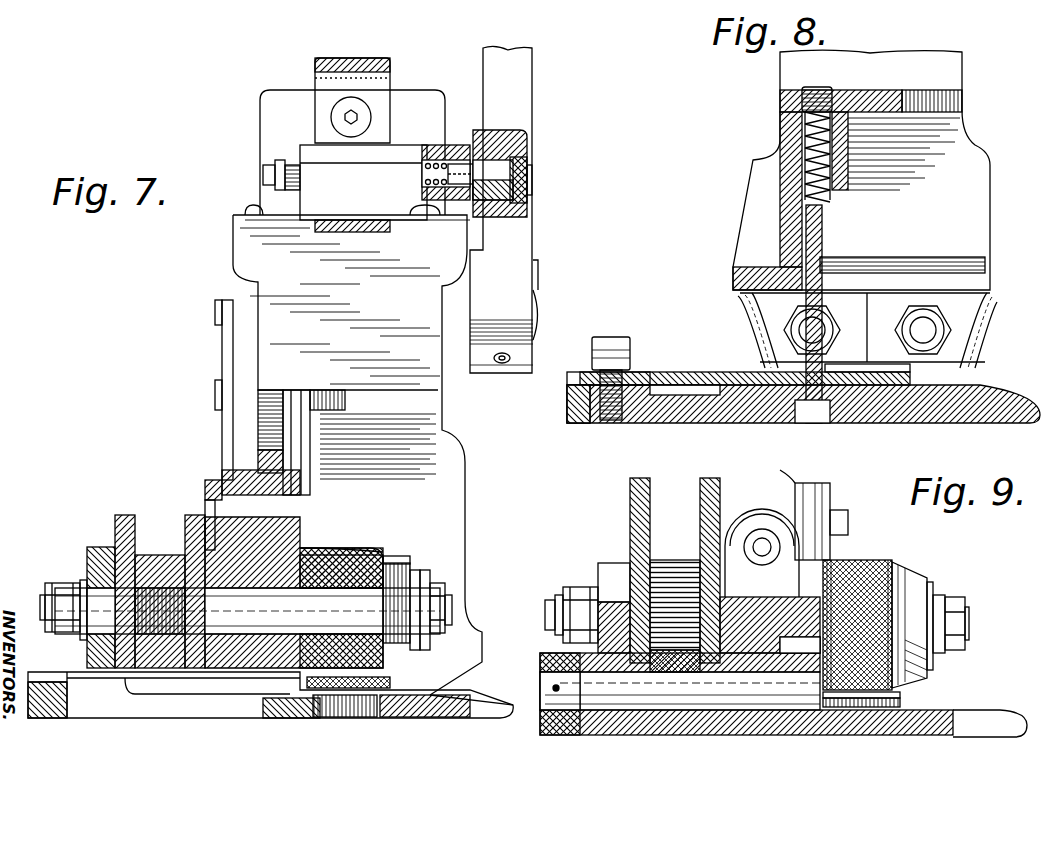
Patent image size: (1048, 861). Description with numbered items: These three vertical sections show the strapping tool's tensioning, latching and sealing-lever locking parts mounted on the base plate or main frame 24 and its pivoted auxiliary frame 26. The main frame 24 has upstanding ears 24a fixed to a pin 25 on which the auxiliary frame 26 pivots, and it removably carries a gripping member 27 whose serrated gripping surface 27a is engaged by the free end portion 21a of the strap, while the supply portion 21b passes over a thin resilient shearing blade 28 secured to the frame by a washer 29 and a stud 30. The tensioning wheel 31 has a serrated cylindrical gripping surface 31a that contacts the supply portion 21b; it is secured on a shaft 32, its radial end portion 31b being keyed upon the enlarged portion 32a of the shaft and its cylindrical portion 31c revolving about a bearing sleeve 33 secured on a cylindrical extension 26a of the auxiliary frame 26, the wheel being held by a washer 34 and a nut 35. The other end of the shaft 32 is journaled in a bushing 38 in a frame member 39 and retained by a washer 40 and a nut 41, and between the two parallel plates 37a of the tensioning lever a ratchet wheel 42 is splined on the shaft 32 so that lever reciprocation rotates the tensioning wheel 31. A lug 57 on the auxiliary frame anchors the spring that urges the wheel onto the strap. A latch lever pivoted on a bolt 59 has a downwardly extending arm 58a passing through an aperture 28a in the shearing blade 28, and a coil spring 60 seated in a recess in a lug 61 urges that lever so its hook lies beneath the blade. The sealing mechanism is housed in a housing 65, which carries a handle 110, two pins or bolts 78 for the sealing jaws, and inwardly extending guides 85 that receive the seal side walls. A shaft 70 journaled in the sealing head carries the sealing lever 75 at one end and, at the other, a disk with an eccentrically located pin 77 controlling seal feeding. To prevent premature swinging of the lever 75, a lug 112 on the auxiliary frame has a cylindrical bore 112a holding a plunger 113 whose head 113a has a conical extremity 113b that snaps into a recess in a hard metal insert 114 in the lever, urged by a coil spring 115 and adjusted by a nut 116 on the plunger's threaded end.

In FIG. 7, the handle 110 is at (328, 58).
In FIG. 7, the lug 112 is at (372, 196).
In FIG. 7, the cylindrical bore 112a is at (448, 145).
In FIG. 7, the plunger 113 is at (430, 187).
In FIG. 7, the plunger head 113a is at (493, 130).
In FIG. 7, the conical extremity 113b is at (535, 134).
In FIG. 7, the hard metal insert 114 is at (540, 165).
In FIG. 7, the coil spring 115 is at (443, 197).
In FIG. 7, the nut 116 is at (290, 162).
In FIG. 7, the sealing lever 75 is at (515, 67).
In FIG. 7, the shaft 70 is at (542, 318).
In FIG. 7, the eccentrically located pin 77 is at (222, 300).
In FIG. 7, the housing 65 is at (270, 352).
In FIG. 7, the lug 61 is at (305, 400).
In FIG. 8, the lug 61 is at (850, 190).
In FIG. 8, the coil spring 60 is at (780, 165).
In FIG. 7, the downwardly extending arm 58a is at (300, 608).
In FIG. 8, the downwardly extending arm 58a is at (822, 224).
In FIG. 7, the bolt 59 is at (210, 495).
In FIG. 9, the bolt 59 is at (848, 520).
In FIG. 9, the lug 57 is at (760, 510).
In FIG. 7, the parallel plates 37a is at (190, 520).
In FIG. 9, the parallel plates 37a is at (705, 490).
In FIG. 7, the bushing 38 is at (100, 550).
In FIG. 7, the frame member 39 is at (102, 672).
In FIG. 7, the washer 40 is at (82, 585).
In FIG. 7, the nut 41 is at (72, 632).
In FIG. 9, the nut 41 is at (583, 595).
In FIG. 7, the ratchet wheel 42 is at (158, 660).
In FIG. 7, the auxiliary frame 26 is at (225, 663).
In FIG. 9, the auxiliary frame 26 is at (740, 700).
In FIG. 7, the cylindrical extension 26a is at (380, 567).
In FIG. 7, the bearing sleeve 33 is at (330, 560).
In FIG. 7, the shaft 32 is at (257, 627).
In FIG. 9, the shaft 32 is at (968, 625).
In FIG. 7, the enlarged portion of the shaft 32a is at (417, 600).
In FIG. 7, the tensioning wheel 31 is at (392, 580).
In FIG. 9, the tensioning wheel 31 is at (915, 572).
In FIG. 7, the serrated cylindrical gripping surface 31a is at (385, 553).
In FIG. 9, the serrated cylindrical gripping surface 31a is at (870, 560).
In FIG. 7, the radial end portion 31b is at (413, 580).
In FIG. 7, the cylindrical portion 31c is at (353, 547).
In FIG. 7, the washer 34 is at (430, 607).
In FIG. 9, the washer 34 is at (932, 665).
In FIG. 7, the nut 35 is at (440, 620).
In FIG. 9, the nut 35 is at (948, 648).
In FIG. 7, the base plate or main frame 24 is at (275, 720).
In FIG. 9, the base plate or main frame 24 is at (858, 720).
In FIG. 9, the upstanding ears 24a is at (580, 655).
In FIG. 9, the pin 25 is at (560, 700).
In FIG. 7, the gripping member 27 is at (352, 700).
In FIG. 7, the serrated gripping surface 27a is at (337, 690).
In FIG. 7, the shearing blade 28 is at (438, 712).
In FIG. 8, the shearing blade 28 is at (706, 388).
In FIG. 8, the aperture 28a is at (852, 378).
In FIG. 8, the washer 29 is at (645, 372).
In FIG. 8, the stud 30 is at (626, 345).
In FIG. 8, the pins or bolts 78 is at (800, 330).
In FIG. 8, the guides 85 is at (741, 322).
In FIG. 9, the free end portion of the strap 21a is at (900, 708).
In FIG. 9, the supply portion of the strap 21b is at (900, 696).